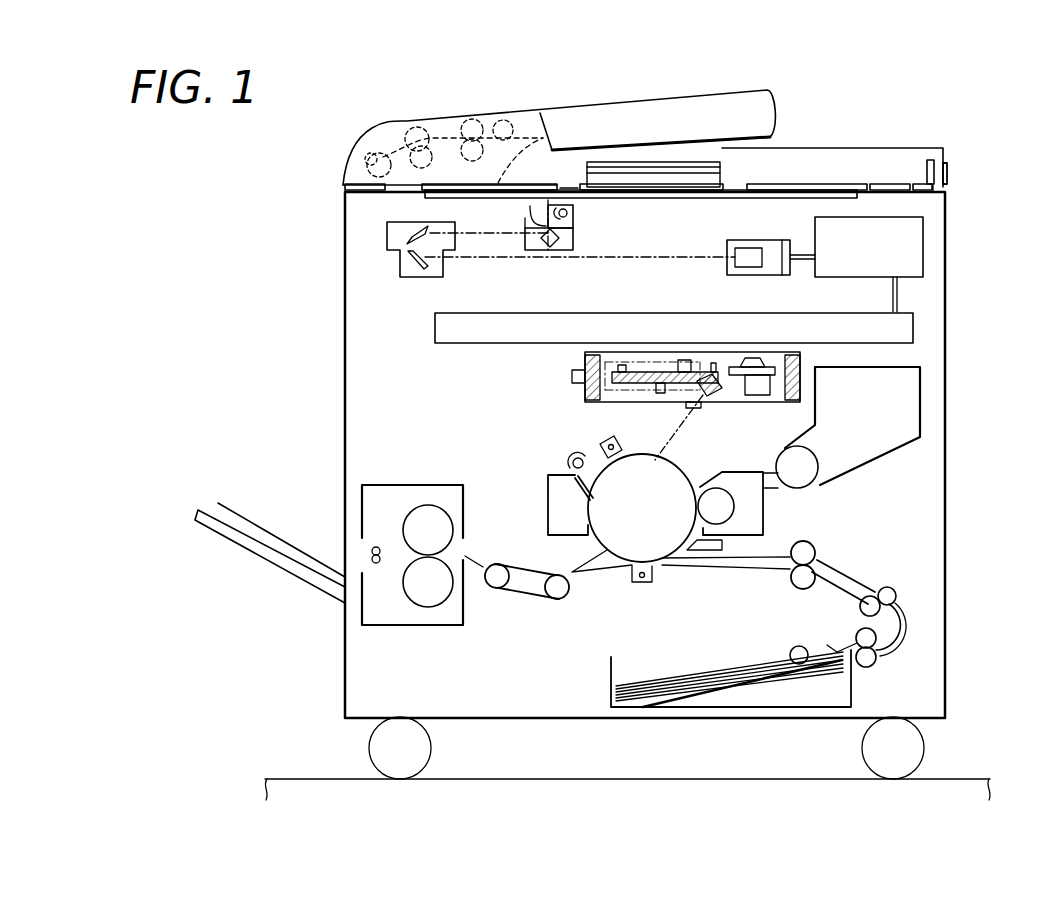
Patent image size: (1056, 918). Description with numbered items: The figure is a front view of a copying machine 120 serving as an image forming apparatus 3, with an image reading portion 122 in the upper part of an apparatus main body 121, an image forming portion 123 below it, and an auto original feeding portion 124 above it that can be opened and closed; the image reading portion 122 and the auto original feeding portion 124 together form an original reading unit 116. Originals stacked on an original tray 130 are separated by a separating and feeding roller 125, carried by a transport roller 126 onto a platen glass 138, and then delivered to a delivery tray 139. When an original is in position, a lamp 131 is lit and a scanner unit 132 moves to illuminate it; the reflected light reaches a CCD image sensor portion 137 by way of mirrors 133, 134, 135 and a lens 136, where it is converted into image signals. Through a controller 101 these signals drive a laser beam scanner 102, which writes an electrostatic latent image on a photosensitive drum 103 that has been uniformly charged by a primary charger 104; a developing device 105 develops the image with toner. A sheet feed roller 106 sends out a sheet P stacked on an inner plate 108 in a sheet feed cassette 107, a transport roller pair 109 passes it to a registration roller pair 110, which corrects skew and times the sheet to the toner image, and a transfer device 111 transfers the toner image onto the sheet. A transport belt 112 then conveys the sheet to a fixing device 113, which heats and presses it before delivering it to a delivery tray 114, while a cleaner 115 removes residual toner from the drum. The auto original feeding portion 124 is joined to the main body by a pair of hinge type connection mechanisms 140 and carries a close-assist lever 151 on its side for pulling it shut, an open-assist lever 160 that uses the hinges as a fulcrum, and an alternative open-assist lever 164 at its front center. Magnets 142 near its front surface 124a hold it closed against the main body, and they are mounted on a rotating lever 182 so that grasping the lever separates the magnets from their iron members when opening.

The image forming apparatus 3 is at (982, 320).
The controller 101 is at (659, 318).
The laser beam scanner 102 is at (582, 358).
The photosensitive drum 103 is at (642, 455).
The primary charger 104 is at (605, 445).
The developing device 105 is at (764, 502).
The sheet feed roller 106 is at (790, 648).
The sheet feed cassette 107 is at (608, 680).
The inner plate 108 is at (852, 690).
The transport roller pair 109 is at (856, 632).
The registration roller pair 110 is at (818, 549).
The transfer device 111 is at (640, 586).
The transport belt 112 is at (520, 599).
The fixing device 113 is at (412, 483).
The delivery tray 114 is at (236, 547).
The cleaner 115 is at (548, 487).
The original reading unit 116 is at (970, 178).
The copying machine 120 is at (658, 141).
The apparatus main body 121 is at (610, 529).
The image reading portion 122 is at (689, 271).
The image forming portion 123 is at (694, 468).
The auto original feeding portion 124 is at (932, 140).
The front surface 124a is at (570, 187).
The separating and feeding roller 125 is at (503, 120).
The transport roller 126 is at (415, 127).
The original tray 130 is at (584, 124).
The lamp 131 is at (575, 210).
The scanner unit 132 is at (580, 242).
The mirror 133 is at (552, 248).
The mirror 134 is at (410, 232).
The mirror 135 is at (402, 262).
The lens 136 is at (750, 242).
The CCD image sensor portion 137 is at (833, 270).
The platen glass 138 is at (672, 198).
The delivery tray 139 is at (770, 150).
The hinge type connection mechanisms 140 is at (888, 185).
The magnets 142 is at (557, 183).
The close-assist lever 151 is at (949, 172).
The open-assist lever 160 is at (934, 186).
The open-assist lever 164 is at (680, 162).
The rotating lever 182 is at (620, 177).
The sheet P is at (690, 662).